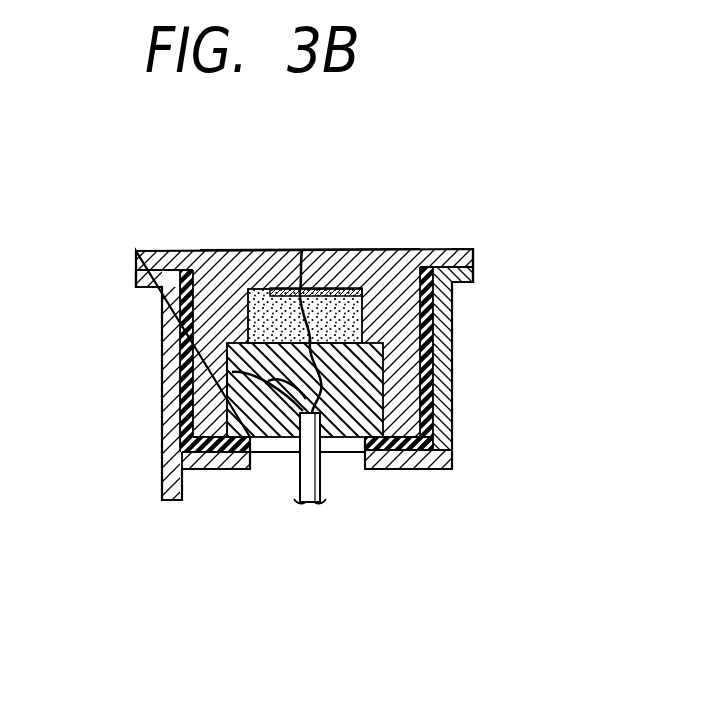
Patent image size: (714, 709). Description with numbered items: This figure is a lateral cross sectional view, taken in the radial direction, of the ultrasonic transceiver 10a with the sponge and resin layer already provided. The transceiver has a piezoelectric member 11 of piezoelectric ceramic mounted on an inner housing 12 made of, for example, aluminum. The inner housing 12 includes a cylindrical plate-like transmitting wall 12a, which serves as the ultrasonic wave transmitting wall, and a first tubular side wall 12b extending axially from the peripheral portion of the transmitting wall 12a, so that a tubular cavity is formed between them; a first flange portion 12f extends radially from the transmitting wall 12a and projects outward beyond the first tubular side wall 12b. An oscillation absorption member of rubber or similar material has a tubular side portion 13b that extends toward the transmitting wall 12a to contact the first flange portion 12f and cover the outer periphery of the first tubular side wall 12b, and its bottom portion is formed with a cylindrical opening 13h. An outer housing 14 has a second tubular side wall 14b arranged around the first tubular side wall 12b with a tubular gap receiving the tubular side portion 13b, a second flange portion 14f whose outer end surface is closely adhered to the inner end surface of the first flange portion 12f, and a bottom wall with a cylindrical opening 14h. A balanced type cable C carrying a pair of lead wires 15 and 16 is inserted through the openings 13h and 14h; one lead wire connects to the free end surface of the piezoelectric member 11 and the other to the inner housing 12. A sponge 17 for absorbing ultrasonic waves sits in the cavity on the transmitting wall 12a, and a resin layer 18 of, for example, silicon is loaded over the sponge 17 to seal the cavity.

The ultrasonic transceiver 10a is at (420, 176).
The piezoelectric member 11 is at (302, 250).
The inner housing 12 is at (230, 250).
The transmitting wall 12a is at (383, 249).
The first tubular side wall 12b is at (228, 380).
The first flange portion 12f is at (459, 249).
The tubular side portion 13b is at (437, 355).
The cylindrical opening 13h is at (343, 447).
The outer housing 14 is at (163, 432).
The second tubular side wall 14b is at (188, 458).
The second flange portion 14f is at (138, 282).
The cylindrical opening 14h is at (268, 462).
The lead wire 15 is at (335, 320).
The lead wire 16 is at (383, 398).
The sponge 17 is at (270, 298).
The resin layer 18 is at (231, 388).
The balanced type cable C is at (310, 503).